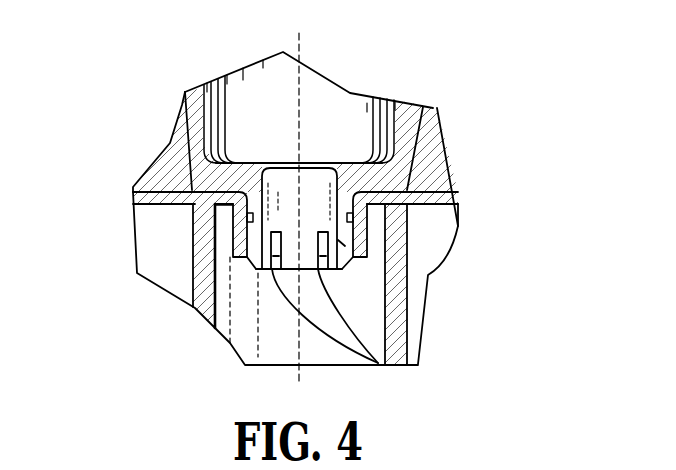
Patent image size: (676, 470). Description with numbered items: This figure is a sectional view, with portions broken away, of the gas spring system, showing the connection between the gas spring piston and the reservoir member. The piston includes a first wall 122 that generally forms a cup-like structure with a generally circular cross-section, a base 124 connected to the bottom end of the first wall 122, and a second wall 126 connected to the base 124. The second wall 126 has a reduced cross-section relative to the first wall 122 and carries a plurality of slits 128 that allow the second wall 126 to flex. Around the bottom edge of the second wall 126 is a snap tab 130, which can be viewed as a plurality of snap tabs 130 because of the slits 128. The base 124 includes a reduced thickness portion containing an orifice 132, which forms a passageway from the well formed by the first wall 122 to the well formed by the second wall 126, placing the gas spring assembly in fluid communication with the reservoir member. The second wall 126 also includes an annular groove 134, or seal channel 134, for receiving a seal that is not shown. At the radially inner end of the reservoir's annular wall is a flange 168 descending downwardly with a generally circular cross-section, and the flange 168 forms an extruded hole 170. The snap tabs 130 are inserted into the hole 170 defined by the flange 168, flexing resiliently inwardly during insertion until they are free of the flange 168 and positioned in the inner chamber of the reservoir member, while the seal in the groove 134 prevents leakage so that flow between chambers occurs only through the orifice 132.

The first wall 122 is at (407, 141).
The base 124 is at (360, 165).
The second wall 126 is at (363, 233).
The slits 128 is at (376, 364).
The snap tab 130 is at (343, 243).
The orifice 132 is at (297, 165).
The annular groove 134 is at (455, 212).
The flange 168 is at (246, 216).
The extruded hole 170 is at (232, 232).